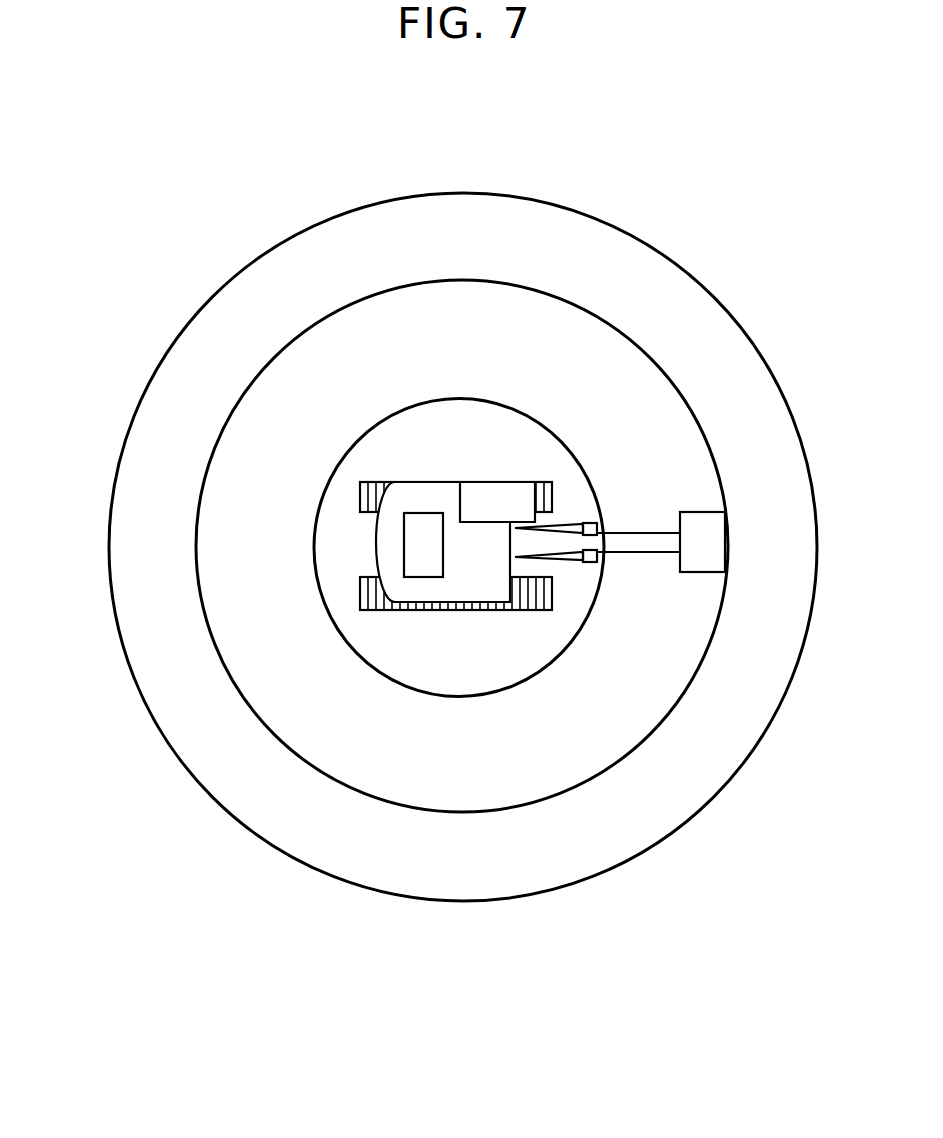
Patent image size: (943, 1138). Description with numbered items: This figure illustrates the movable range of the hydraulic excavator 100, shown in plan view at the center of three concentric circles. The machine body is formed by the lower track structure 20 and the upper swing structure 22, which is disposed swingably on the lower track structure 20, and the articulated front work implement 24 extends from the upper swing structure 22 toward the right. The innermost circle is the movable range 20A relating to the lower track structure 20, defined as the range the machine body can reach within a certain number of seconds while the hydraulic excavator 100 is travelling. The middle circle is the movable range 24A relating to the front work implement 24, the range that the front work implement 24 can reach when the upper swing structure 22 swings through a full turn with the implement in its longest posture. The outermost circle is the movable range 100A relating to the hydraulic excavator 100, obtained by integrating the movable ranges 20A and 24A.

The hydraulic excavator 100 is at (428, 465).
The lower track structure 20 is at (373, 612).
The upper swing structure 22 is at (376, 548).
The front work implement 24 is at (638, 558).
The movable range relating to the lower track structure 20A is at (483, 398).
The movable range relating to the front work implement 24A is at (593, 312).
The movable range relating to the hydraulic excavator 100A is at (738, 318).